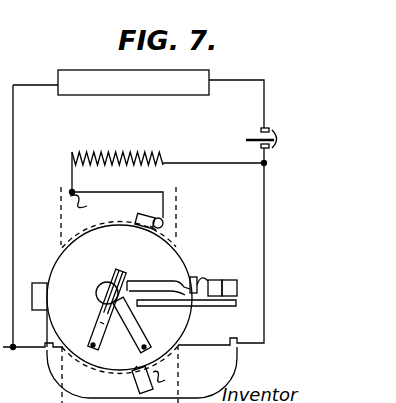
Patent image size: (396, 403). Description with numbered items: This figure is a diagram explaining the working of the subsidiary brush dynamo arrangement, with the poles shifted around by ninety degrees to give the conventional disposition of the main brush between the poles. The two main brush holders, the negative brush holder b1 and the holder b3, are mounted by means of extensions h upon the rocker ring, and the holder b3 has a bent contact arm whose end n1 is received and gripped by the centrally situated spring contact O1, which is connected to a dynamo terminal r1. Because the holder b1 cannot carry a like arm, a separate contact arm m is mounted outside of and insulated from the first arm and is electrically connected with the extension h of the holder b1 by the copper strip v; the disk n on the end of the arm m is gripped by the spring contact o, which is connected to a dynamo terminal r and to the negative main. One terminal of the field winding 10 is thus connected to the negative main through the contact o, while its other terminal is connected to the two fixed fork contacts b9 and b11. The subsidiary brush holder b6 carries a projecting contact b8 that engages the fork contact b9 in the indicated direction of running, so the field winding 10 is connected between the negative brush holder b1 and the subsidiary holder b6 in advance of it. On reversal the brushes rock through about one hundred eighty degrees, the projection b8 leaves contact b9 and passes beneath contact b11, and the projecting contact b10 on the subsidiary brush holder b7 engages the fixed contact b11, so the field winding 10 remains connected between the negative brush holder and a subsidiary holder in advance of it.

The field winding 10 is at (118, 152).
The fixed fork contact b11 is at (72, 201).
The subsidiary brush holder b6 is at (140, 218).
The projecting contact b8 is at (162, 220).
The fixed fork contact b9 is at (150, 228).
The spring contact O1 is at (119, 268).
The end of contact arm n1 is at (99, 292).
The dynamo terminal r1 is at (100, 324).
The dynamo terminal r is at (139, 325).
The spring contact o is at (139, 314).
The contact arm m is at (194, 304).
The disk n is at (186, 312).
The brush holder b3 is at (191, 277).
The extension h is at (219, 281).
The negative brush holder b1 is at (32, 311).
The copper strip v is at (47, 362).
The projecting contact b10 is at (166, 378).
The subsidiary brush holder b7 is at (134, 370).